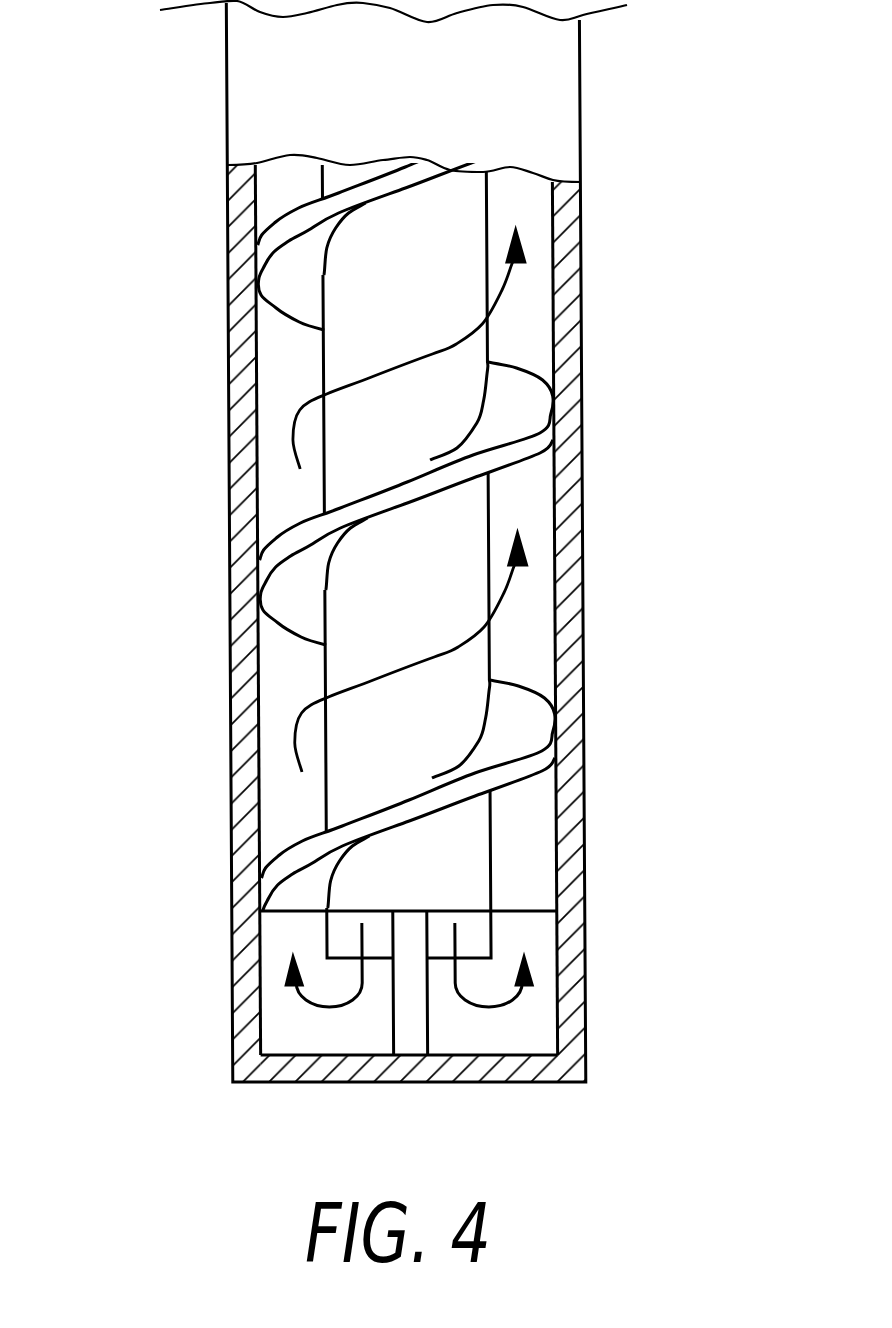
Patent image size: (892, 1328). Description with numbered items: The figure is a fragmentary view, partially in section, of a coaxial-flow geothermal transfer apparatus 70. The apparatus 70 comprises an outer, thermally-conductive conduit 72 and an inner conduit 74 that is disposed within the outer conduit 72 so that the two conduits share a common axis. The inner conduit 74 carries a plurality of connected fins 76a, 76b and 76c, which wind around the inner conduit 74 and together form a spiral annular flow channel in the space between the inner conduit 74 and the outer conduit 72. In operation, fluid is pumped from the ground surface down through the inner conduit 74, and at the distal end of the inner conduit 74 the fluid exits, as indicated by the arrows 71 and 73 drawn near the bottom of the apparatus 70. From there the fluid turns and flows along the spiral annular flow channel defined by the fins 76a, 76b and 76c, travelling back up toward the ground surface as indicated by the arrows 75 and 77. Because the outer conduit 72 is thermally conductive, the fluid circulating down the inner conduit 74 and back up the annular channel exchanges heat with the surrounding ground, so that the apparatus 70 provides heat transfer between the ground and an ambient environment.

The geothermal transfer apparatus 70 is at (205, 590).
The arrow 71 is at (328, 1007).
The outer conduit 72 is at (228, 433).
The arrow 73 is at (489, 1007).
The inner conduit 74 is at (433, 717).
The arrow 75 is at (370, 375).
The fin 76a is at (285, 213).
The fin 76b is at (512, 408).
The fin 76c is at (513, 720).
The arrow 77 is at (372, 678).